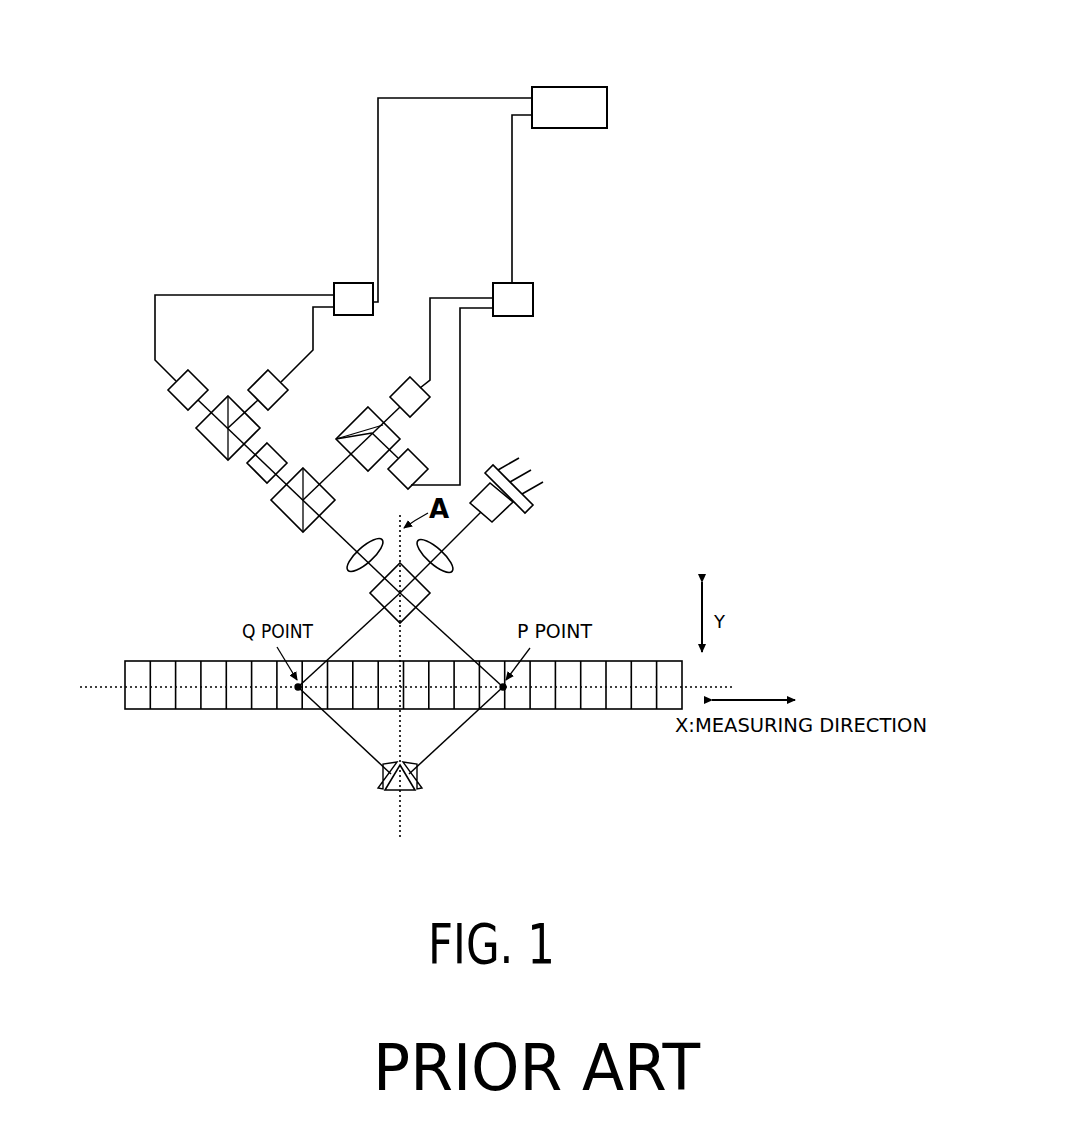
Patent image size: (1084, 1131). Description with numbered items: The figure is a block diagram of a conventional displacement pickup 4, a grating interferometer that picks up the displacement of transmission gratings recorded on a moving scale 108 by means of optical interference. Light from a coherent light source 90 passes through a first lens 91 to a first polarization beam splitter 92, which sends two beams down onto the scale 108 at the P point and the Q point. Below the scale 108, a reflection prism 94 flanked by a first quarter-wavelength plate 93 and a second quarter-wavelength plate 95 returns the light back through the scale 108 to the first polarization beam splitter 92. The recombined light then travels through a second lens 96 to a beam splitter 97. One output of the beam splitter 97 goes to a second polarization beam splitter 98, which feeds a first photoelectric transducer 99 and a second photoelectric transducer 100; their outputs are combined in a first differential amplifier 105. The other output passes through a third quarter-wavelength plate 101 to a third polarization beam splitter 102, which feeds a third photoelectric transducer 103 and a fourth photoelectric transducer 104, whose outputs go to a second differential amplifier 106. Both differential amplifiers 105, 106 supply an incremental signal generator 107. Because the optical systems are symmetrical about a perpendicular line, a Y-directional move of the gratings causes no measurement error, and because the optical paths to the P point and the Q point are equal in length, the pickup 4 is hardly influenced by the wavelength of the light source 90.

The displacement pickup 4 is at (610, 63).
The coherent light source 90 is at (537, 504).
The first lens 91 is at (449, 561).
The first polarization beam splitter 92 is at (377, 597).
The first quarter-wavelength plate 93 is at (424, 777).
The reflection prism 94 is at (387, 792).
The second quarter-wavelength plate 95 is at (379, 777).
The second lens 96 is at (344, 562).
The beam splitter 97 is at (284, 506).
The second polarization beam splitter 98 is at (364, 410).
The first photoelectric transducer 99 is at (413, 468).
The second photoelectric transducer 100 is at (403, 386).
The third quarter-wavelength plate 101 is at (251, 474).
The third polarization beam splitter 102 is at (205, 430).
The third photoelectric transducer 103 is at (260, 378).
The fourth photoelectric transducer 104 is at (173, 381).
The first differential amplifier 105 is at (513, 299).
The second differential amplifier 106 is at (353, 299).
The incremental signal generator 107 is at (569, 107).
The scale 108 is at (637, 709).